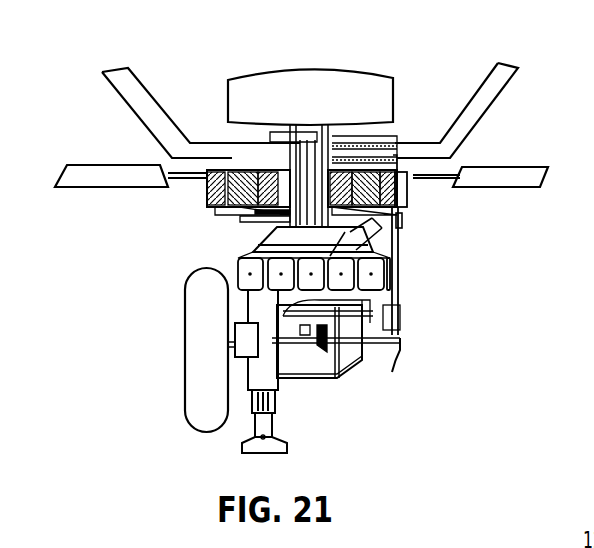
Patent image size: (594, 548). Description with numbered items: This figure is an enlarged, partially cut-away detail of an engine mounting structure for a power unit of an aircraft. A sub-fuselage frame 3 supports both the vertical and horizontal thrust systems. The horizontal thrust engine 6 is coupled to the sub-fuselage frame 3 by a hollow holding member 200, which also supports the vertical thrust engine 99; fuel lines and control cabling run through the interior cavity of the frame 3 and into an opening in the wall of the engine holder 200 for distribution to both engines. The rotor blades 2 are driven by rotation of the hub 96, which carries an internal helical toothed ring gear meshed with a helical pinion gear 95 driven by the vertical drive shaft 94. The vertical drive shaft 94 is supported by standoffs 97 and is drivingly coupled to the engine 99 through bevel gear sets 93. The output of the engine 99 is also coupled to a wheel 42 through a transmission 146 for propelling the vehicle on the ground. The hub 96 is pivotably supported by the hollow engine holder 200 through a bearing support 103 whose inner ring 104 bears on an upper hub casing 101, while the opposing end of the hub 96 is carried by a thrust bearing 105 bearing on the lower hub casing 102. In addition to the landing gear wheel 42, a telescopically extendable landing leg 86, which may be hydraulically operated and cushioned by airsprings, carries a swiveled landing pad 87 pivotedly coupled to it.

The rotor blades 2 is at (84, 168).
The sub-fuselage frame 3 is at (150, 101).
The horizontal thrust engine 6 is at (368, 70).
The wheel 42 is at (195, 398).
The landing leg 86 is at (252, 413).
The landing pad 87 is at (290, 452).
The bevel gear sets 93 is at (322, 345).
The vertical drive shaft 94 is at (398, 270).
The helical pinion gear 95 is at (404, 214).
The hub 96 is at (418, 192).
The standoffs 97 is at (390, 247).
The vertical thrust engine 99 is at (255, 245).
The upper hub casing 101 is at (393, 163).
The lower hub casing 102 is at (215, 222).
The bearing support 103 is at (300, 150).
The inner ring 104 is at (285, 165).
The thrust bearing 105 is at (255, 213).
The transmission 146 is at (247, 337).
The hollow holding member 200 is at (262, 233).